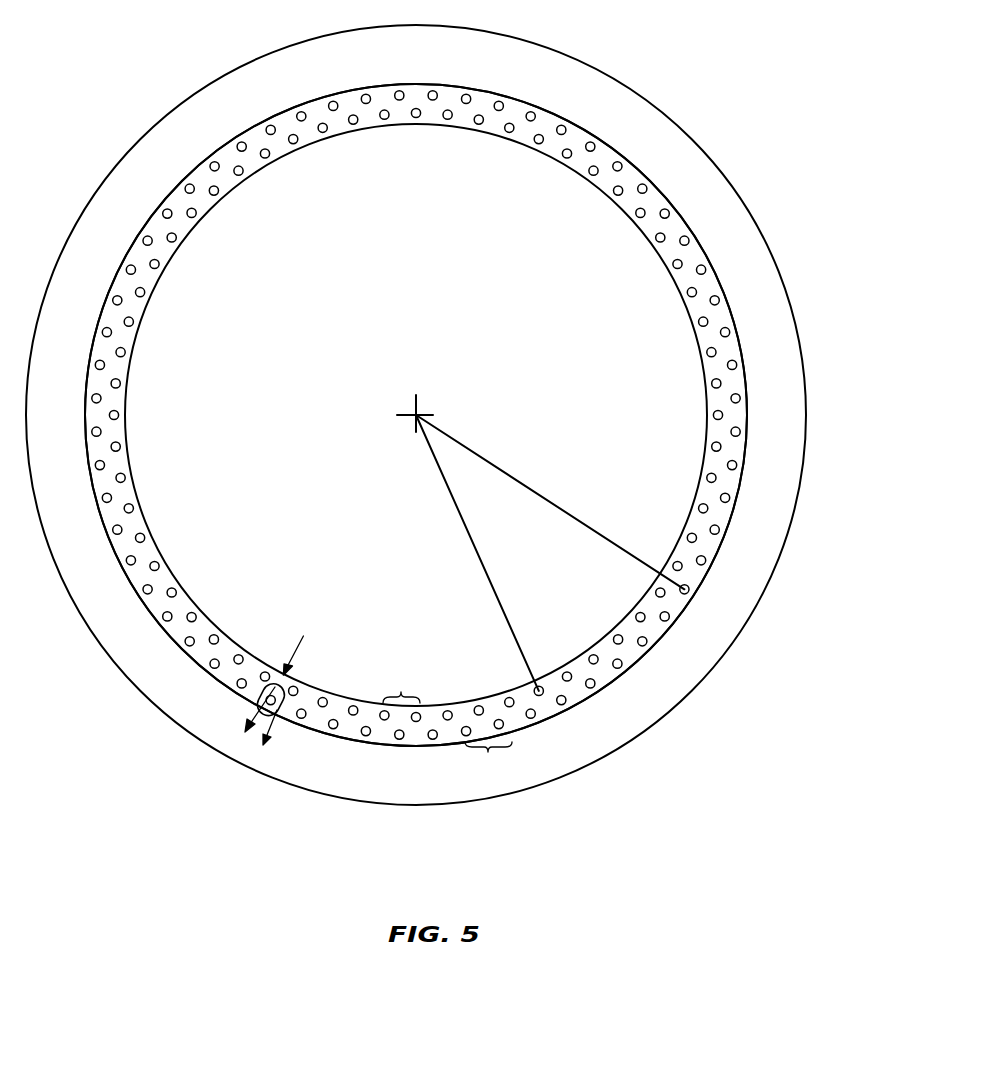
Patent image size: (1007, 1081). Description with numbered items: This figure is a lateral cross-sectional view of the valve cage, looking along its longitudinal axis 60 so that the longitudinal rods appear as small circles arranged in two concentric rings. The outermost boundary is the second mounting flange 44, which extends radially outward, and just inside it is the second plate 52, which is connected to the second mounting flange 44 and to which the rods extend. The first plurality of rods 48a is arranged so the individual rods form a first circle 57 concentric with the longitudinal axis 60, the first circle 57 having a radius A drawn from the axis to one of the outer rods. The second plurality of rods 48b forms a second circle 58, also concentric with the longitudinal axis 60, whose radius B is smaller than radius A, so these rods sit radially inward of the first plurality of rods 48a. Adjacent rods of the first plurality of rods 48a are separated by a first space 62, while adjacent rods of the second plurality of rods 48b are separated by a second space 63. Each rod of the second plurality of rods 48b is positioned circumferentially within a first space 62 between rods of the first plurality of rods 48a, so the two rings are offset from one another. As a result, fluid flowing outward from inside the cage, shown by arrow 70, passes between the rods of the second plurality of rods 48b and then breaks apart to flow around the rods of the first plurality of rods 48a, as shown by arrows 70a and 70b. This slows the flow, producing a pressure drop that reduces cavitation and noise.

The second mounting flange 44 is at (802, 360).
The second plate 52 is at (729, 307).
The first circle 57 is at (577, 119).
The second circle 58 is at (593, 191).
The longitudinal axis 60 is at (419, 411).
The first plurality of rods 48a is at (737, 468).
The second plurality of rods 48b is at (709, 474).
The first space 62 is at (488, 757).
The second space 63 is at (401, 684).
The arrow 70 is at (293, 645).
The arrow 70a is at (240, 714).
The arrow 70b is at (277, 730).
The radius A is at (540, 494).
The radius B is at (486, 569).